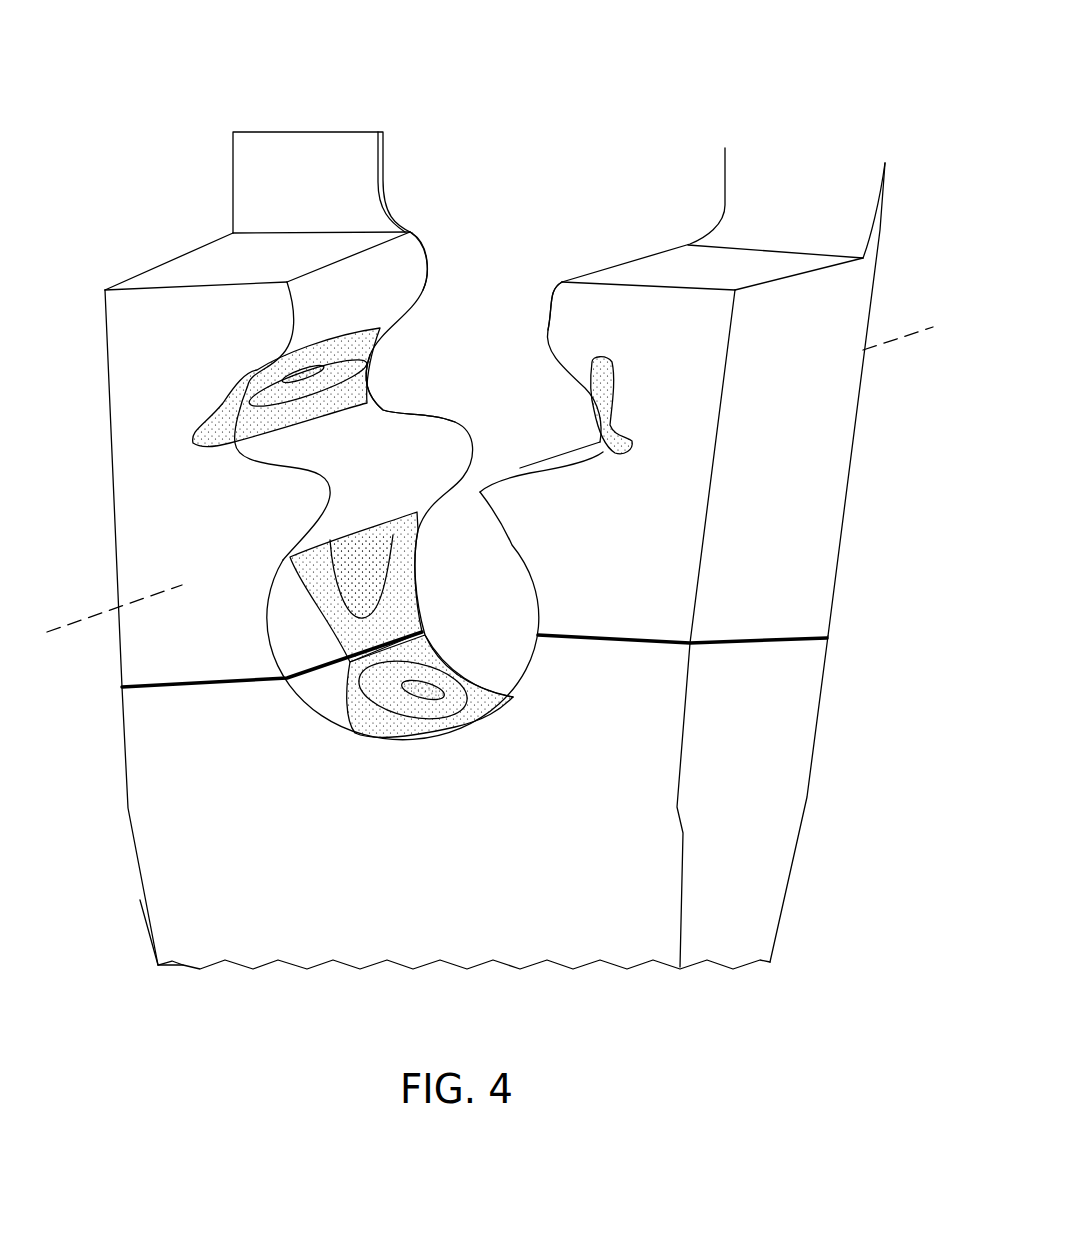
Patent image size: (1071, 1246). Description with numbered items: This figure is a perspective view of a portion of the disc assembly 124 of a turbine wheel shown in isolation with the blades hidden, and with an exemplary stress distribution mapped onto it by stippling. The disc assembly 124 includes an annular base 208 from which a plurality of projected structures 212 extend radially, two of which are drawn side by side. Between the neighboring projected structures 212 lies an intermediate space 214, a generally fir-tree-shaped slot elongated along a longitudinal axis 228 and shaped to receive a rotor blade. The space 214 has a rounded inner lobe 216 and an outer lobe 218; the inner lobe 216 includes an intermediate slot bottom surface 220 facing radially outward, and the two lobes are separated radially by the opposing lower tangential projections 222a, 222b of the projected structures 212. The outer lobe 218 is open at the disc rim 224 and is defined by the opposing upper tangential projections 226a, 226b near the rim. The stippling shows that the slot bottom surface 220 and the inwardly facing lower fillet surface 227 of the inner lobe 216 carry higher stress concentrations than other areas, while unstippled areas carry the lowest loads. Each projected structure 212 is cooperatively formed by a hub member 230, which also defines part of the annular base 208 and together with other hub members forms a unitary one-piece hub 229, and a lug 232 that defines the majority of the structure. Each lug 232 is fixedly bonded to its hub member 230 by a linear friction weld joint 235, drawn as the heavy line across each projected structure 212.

The disc assembly 124 is at (302, 116).
The annular base 208 is at (210, 937).
The projected structures 212 is at (173, 247).
The intermediate spaces 214 is at (524, 257).
The inner lobe 216 is at (528, 653).
The outer lobe 218 is at (600, 415).
The intermediate slot bottom surface 220 is at (477, 727).
The lower tangential projection 222a is at (408, 420).
The lower tangential projection 222b is at (548, 460).
The disc rim 224 is at (296, 245).
The upper tangential projection 226a is at (421, 240).
The upper tangential projection 226b is at (553, 303).
The lower fillet surface 227 is at (403, 530).
The longitudinal axis 228 is at (83, 617).
The hub 229 is at (369, 935).
The hub member 230 is at (150, 778).
The lug 232 is at (142, 356).
The weld joint 235 is at (156, 690).